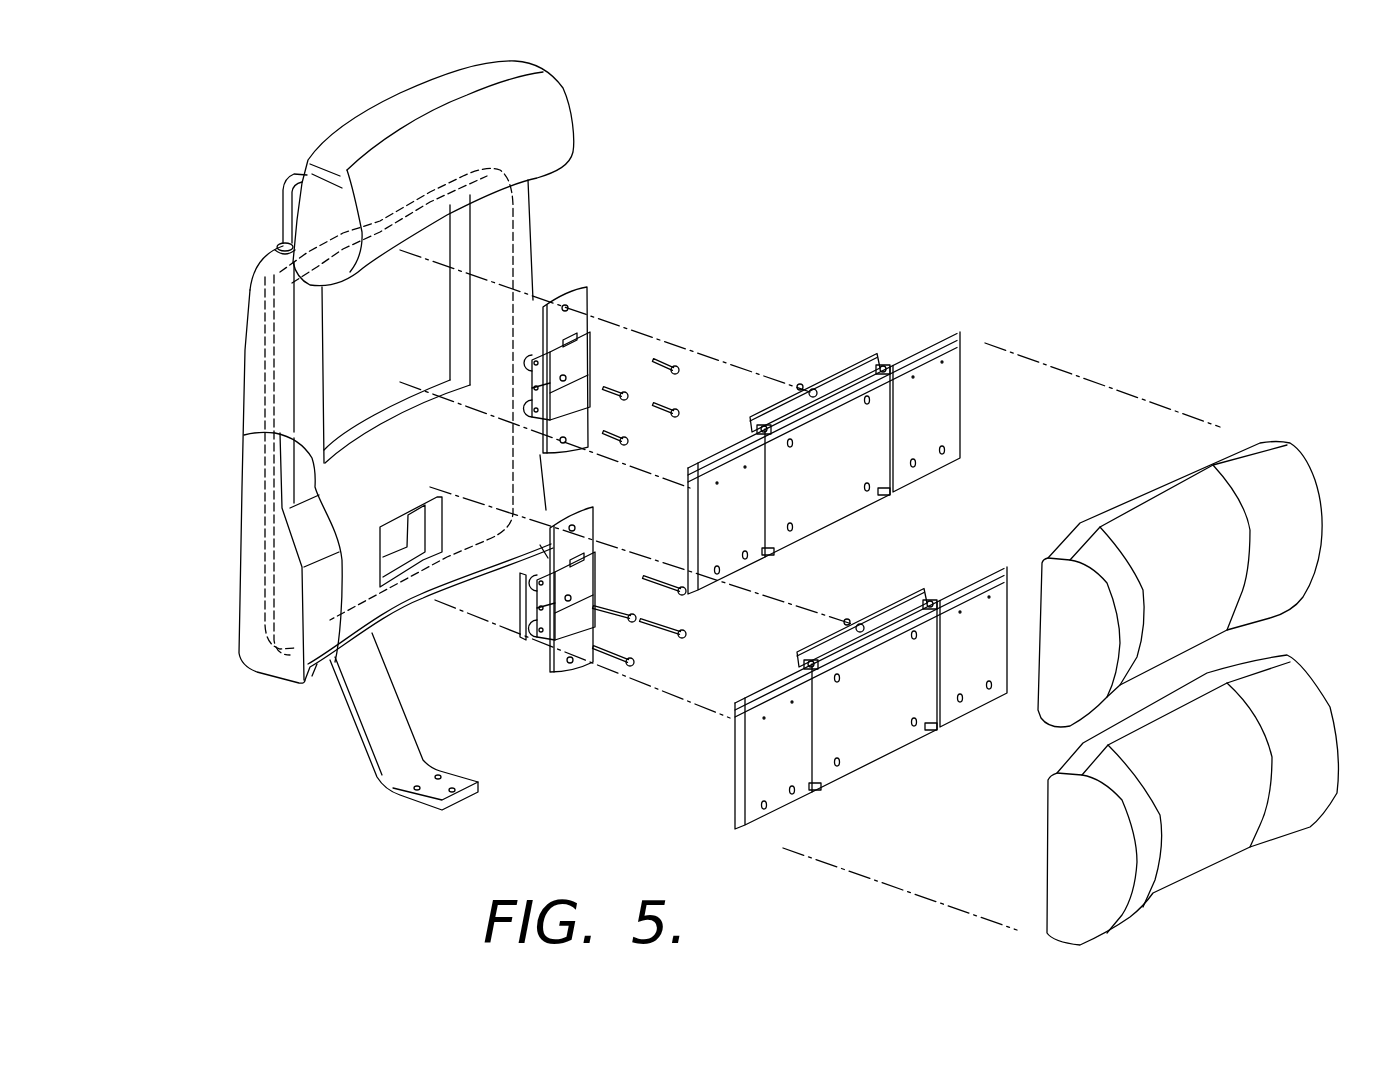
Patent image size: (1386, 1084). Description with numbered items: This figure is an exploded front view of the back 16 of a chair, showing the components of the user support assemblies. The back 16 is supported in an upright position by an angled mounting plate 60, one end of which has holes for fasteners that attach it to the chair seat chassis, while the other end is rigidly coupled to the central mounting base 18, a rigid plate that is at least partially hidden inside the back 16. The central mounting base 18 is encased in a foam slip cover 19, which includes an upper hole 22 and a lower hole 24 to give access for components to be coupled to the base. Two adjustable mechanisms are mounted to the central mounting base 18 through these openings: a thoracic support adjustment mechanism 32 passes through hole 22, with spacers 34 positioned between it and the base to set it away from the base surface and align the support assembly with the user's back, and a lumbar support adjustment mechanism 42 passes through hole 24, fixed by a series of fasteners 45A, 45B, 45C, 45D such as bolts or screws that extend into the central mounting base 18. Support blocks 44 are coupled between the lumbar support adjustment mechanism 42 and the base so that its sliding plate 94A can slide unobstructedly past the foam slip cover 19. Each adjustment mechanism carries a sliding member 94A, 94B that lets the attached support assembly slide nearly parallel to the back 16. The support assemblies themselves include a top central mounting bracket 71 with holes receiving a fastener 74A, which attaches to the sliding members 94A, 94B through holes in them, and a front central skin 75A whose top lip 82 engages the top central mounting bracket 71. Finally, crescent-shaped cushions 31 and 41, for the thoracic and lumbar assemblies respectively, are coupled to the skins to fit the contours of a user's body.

The back 16 is at (222, 466).
The central mounting base 18 is at (370, 329).
The foam slip cover 19 is at (314, 662).
The hole 22 is at (407, 403).
The hole 24 is at (413, 523).
The crescent-shaped cushion 31 is at (1175, 577).
The thoracic support adjustment mechanism 32 is at (605, 291).
The spacers 34 is at (527, 407).
The crescent-shaped cushion 41 is at (1200, 792).
The lumbar support adjustment mechanism 42 is at (516, 656).
The support blocks 44 is at (519, 607).
The fastener 45A is at (631, 667).
The fastener 45B is at (686, 634).
The fastener 45C is at (685, 591).
The fastener 45D is at (633, 622).
The mounting plate 60 is at (353, 745).
The top central mounting bracket 71 is at (863, 352).
The fastener 74A is at (811, 386).
The front central skin 75A is at (812, 469).
The top lip 82 is at (878, 376).
The sliding member 94A is at (567, 667).
The sliding member 94B is at (568, 300).